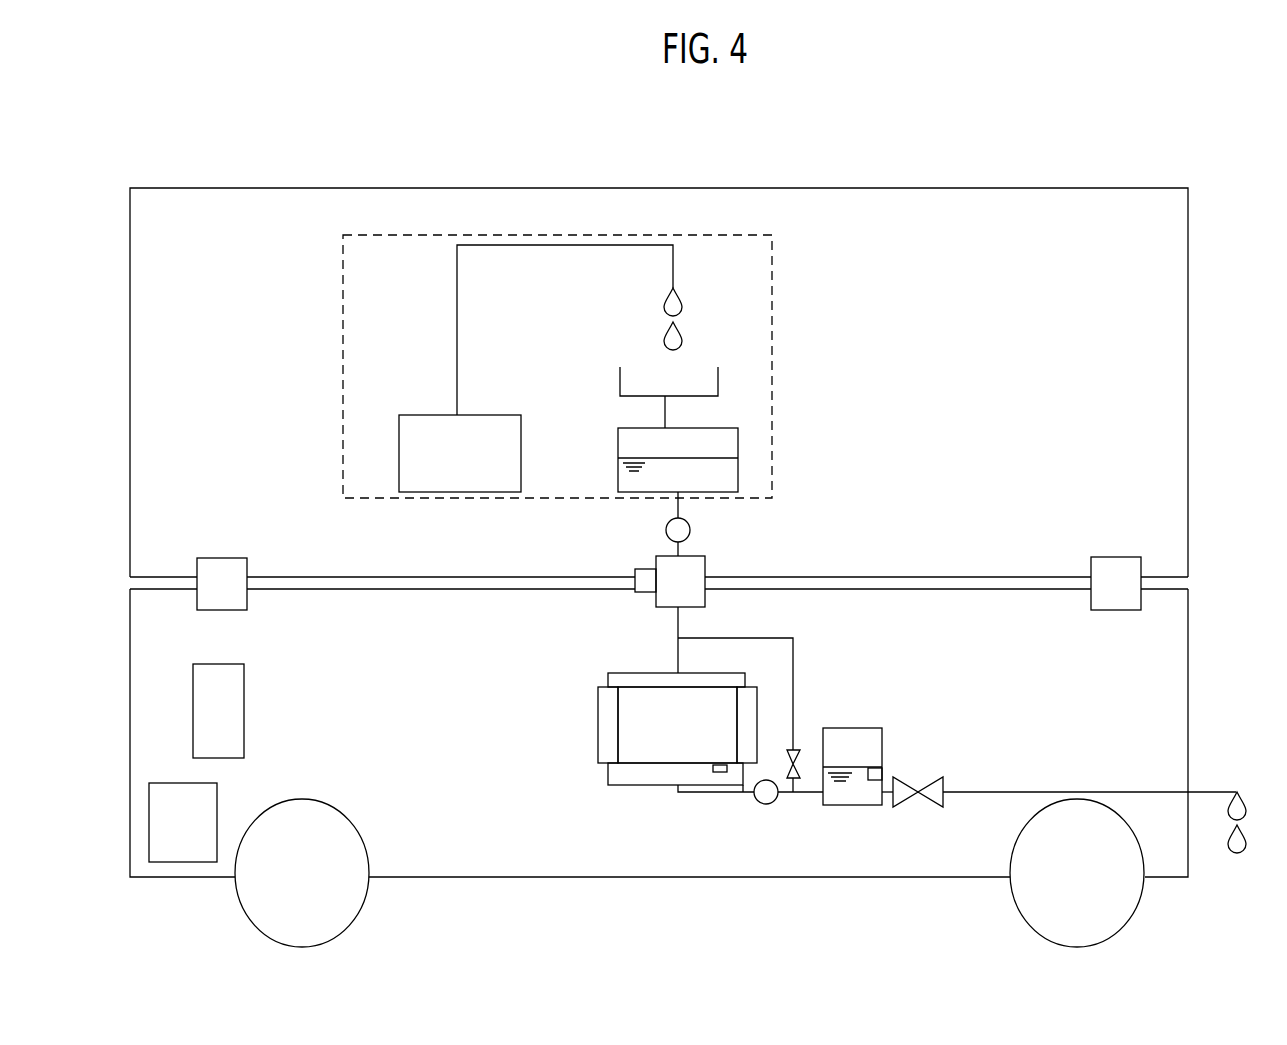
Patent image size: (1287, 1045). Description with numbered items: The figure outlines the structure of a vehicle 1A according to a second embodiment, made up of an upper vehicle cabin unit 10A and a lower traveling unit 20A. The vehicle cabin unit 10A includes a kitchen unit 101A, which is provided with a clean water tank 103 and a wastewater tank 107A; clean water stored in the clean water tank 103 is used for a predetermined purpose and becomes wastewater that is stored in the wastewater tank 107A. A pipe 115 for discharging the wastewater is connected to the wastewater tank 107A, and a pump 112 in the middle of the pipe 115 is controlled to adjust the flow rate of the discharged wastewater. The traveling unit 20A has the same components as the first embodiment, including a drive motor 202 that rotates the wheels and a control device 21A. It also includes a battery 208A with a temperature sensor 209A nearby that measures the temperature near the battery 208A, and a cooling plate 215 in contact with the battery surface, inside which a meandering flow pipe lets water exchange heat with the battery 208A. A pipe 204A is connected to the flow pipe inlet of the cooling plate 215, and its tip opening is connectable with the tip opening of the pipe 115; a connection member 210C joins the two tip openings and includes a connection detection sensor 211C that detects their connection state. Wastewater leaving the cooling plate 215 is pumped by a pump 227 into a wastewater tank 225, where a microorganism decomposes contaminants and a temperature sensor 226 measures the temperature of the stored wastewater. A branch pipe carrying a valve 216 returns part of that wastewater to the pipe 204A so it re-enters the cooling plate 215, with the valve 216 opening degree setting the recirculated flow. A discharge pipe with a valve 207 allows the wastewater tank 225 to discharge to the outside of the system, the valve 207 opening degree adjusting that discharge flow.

The vehicle 1A is at (1198, 159).
The vehicle cabin unit 10A is at (1188, 198).
The traveling unit 20A is at (1188, 877).
The kitchen unit 101A is at (374, 236).
The clean water tank 103 is at (412, 415).
The wastewater tank 107A is at (618, 438).
The pipe 115 is at (678, 505).
The pump 112 is at (666, 530).
The connection detection sensor 211C is at (635, 580).
The connection member 210C is at (656, 600).
The pipe 204A is at (678, 626).
The cooling plate 215 is at (765, 673).
The valve 216 is at (794, 750).
The temperature sensor 226 is at (873, 768).
The valve 207 is at (943, 782).
The drive motor 202 is at (244, 700).
The control device 21A is at (217, 797).
The battery 208A is at (657, 753).
The temperature sensor 209A is at (716, 772).
The pump 227 is at (766, 804).
The wastewater tank 225 is at (881, 805).